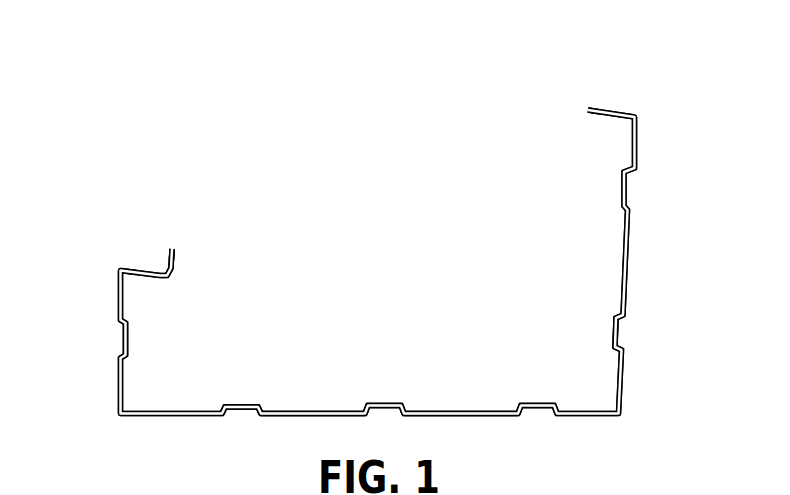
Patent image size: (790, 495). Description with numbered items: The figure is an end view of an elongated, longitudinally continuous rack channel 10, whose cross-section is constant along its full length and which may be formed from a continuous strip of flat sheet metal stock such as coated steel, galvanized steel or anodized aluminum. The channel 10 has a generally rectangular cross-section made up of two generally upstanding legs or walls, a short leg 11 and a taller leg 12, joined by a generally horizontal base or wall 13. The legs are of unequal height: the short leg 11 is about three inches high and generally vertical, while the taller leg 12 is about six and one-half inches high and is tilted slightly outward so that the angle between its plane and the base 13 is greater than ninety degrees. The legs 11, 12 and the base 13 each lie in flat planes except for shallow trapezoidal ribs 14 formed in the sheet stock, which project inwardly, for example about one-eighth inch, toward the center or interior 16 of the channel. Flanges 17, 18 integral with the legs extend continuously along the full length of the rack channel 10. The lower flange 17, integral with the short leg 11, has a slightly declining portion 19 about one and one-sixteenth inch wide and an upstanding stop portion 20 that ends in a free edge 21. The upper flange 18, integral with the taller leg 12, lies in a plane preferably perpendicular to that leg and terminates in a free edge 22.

The rack channel 10 is at (502, 112).
The short leg 11 is at (118, 295).
The taller leg 12 is at (627, 247).
The base 13 is at (462, 416).
The trapezoidal ribs 14 is at (127, 340).
The interior 16 is at (392, 344).
The lower flange 17 is at (144, 260).
The upper flange 18 is at (612, 108).
The declining portion 19 is at (132, 268).
The stop portion 20 is at (176, 256).
The free edge 21 is at (173, 250).
The free edge 22 is at (590, 107).